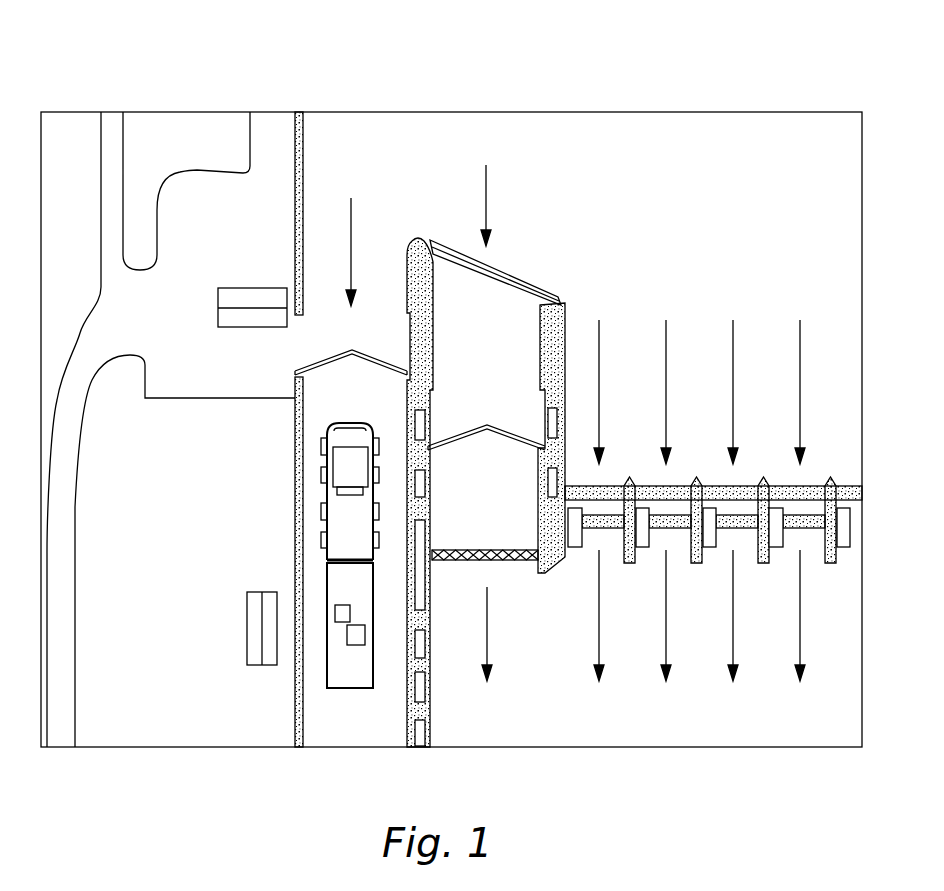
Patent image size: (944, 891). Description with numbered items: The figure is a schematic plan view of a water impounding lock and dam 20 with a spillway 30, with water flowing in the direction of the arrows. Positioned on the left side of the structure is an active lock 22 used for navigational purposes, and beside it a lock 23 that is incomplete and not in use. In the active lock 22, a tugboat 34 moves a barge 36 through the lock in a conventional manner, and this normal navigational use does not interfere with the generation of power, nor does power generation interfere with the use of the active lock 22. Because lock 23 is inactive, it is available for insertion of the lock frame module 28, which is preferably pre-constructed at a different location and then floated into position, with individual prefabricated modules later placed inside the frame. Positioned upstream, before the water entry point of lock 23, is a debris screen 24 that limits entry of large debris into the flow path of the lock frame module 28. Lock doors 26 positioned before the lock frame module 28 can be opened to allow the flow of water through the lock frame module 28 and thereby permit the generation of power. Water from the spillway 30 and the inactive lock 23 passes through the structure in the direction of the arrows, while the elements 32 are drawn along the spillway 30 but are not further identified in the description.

The vehicle washing / processing facility system 20 is at (414, 60).
The roof of side structure 22 is at (367, 355).
The wall of building 23 is at (567, 330).
The sloped roof of building 24 is at (520, 280).
The inner roof 26 is at (456, 442).
The lattice screen / grating 28 is at (500, 572).
The outdoor platform with posts 30 is at (712, 327).
The pads / mounting blocks 32 is at (846, 560).
The truck cab 34 is at (327, 490).
The trailer 36 is at (347, 665).